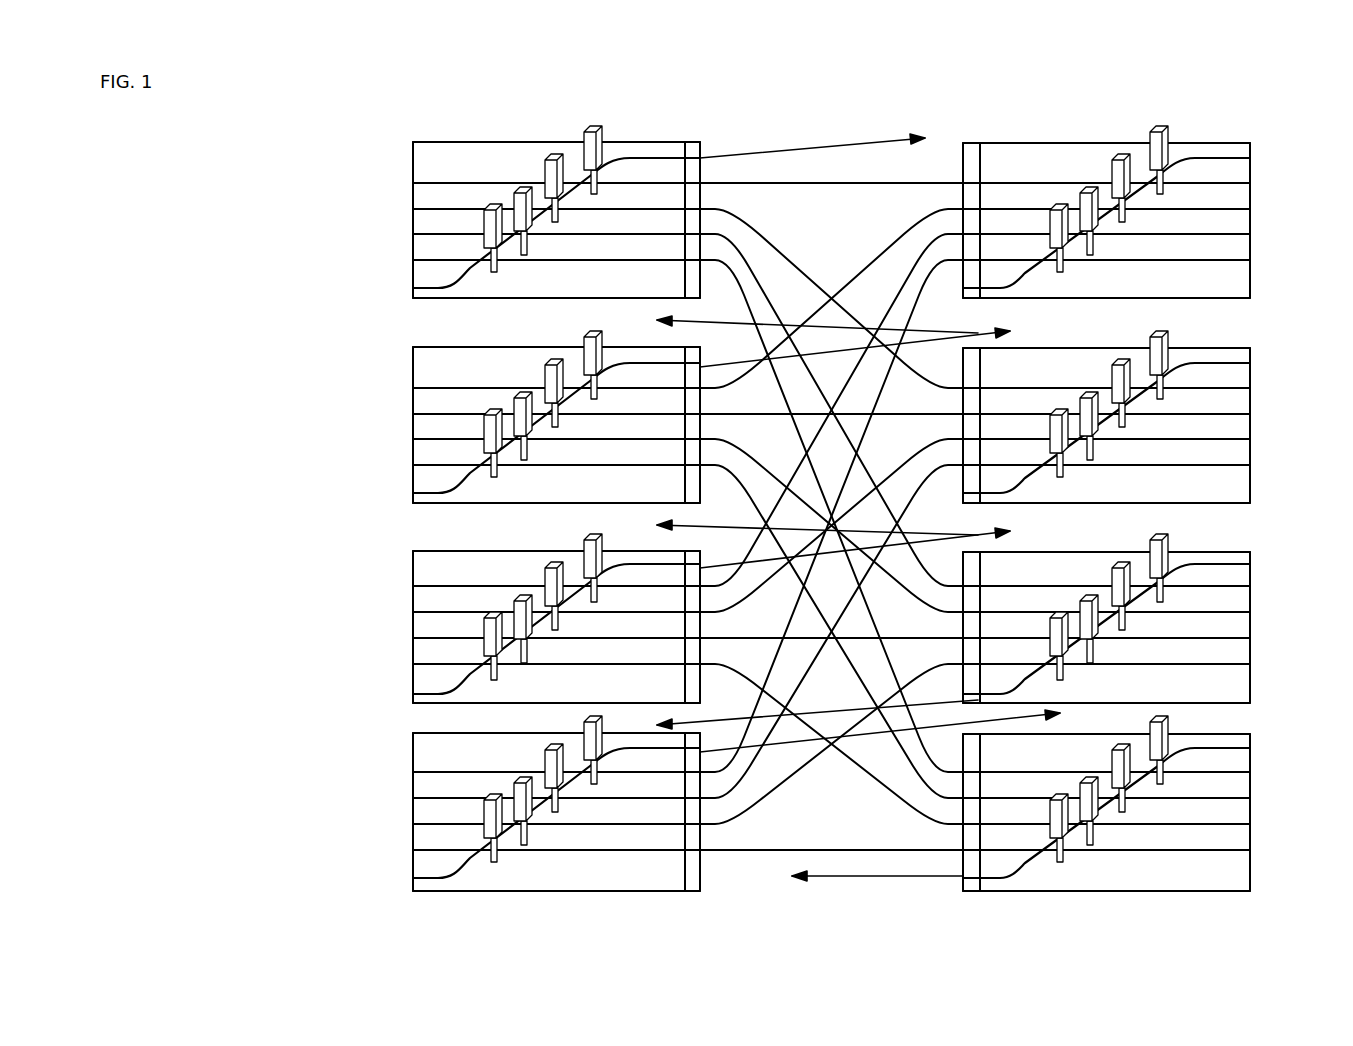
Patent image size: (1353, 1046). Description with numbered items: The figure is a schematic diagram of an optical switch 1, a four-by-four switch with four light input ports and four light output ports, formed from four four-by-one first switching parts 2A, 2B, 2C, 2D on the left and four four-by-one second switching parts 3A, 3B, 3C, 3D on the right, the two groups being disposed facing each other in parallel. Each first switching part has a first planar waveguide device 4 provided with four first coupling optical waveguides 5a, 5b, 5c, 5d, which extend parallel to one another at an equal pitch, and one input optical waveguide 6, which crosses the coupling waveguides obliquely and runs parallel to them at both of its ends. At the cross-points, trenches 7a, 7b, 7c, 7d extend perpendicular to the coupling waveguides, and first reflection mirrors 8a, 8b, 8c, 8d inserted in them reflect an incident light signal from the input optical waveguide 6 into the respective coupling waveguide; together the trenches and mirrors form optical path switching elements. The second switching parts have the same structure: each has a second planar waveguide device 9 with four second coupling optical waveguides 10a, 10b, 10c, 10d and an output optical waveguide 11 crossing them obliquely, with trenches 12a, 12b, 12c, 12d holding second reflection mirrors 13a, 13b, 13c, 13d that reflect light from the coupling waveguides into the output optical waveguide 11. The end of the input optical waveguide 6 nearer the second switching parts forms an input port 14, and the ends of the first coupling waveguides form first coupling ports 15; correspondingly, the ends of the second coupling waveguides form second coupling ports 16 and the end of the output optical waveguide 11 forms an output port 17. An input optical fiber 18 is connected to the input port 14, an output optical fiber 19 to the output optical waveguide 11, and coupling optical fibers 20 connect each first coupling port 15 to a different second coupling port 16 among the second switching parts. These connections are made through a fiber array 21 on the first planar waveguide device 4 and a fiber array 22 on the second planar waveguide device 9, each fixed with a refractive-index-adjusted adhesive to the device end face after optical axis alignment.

The optical switch 1 is at (750, 115).
The first switching part 2A is at (411, 158).
The first switching part 2B is at (411, 363).
The first switching part 2C is at (411, 566).
The first switching part 2D is at (411, 758).
The second switching part 3A is at (1243, 140).
The second switching part 3B is at (1236, 348).
The second switching part 3C is at (1236, 553).
The second switching part 3D is at (1236, 735).
The first planar waveguide device 4 is at (471, 146).
The first coupling optical waveguide 5a is at (426, 184).
The first coupling optical waveguide 5b is at (426, 210).
The first coupling optical waveguide 5c is at (426, 235).
The first coupling optical waveguide 5d is at (426, 261).
The input optical waveguide 6 is at (447, 290).
The trench 7a is at (598, 395).
The trench 7b is at (559, 422).
The trench 7c is at (528, 450).
The trench 7d is at (498, 472).
The first reflection mirror 8a is at (584, 342).
The first reflection mirror 8b is at (543, 376).
The first reflection mirror 8c is at (512, 403).
The first reflection mirror 8d is at (483, 433).
The second planar waveguide device 9 is at (1035, 147).
The second coupling optical waveguide 10a is at (1240, 184).
The second coupling optical waveguide 10b is at (1240, 210).
The second coupling optical waveguide 10c is at (1240, 235).
The second coupling optical waveguide 10d is at (1240, 261).
The output optical waveguide 11 is at (1213, 150).
The trench 12a is at (1164, 396).
The trench 12b is at (1126, 421).
The trench 12c is at (1094, 450).
The trench 12d is at (1064, 476).
The second reflection mirror 13a is at (1165, 336).
The second reflection mirror 13b is at (1128, 363).
The second reflection mirror 13c is at (1096, 396).
The second reflection mirror 13d is at (1062, 413).
The input port 14 is at (683, 152).
The first coupling port 15 is at (680, 189).
The second coupling port 16 is at (984, 181).
The output port 17 is at (975, 290).
The input optical fiber 18 is at (857, 143).
The output optical fiber 19 is at (716, 323).
The coupling optical fiber 20 is at (824, 185).
The fiber array 21 is at (692, 141).
The fiber array 22 is at (972, 142).